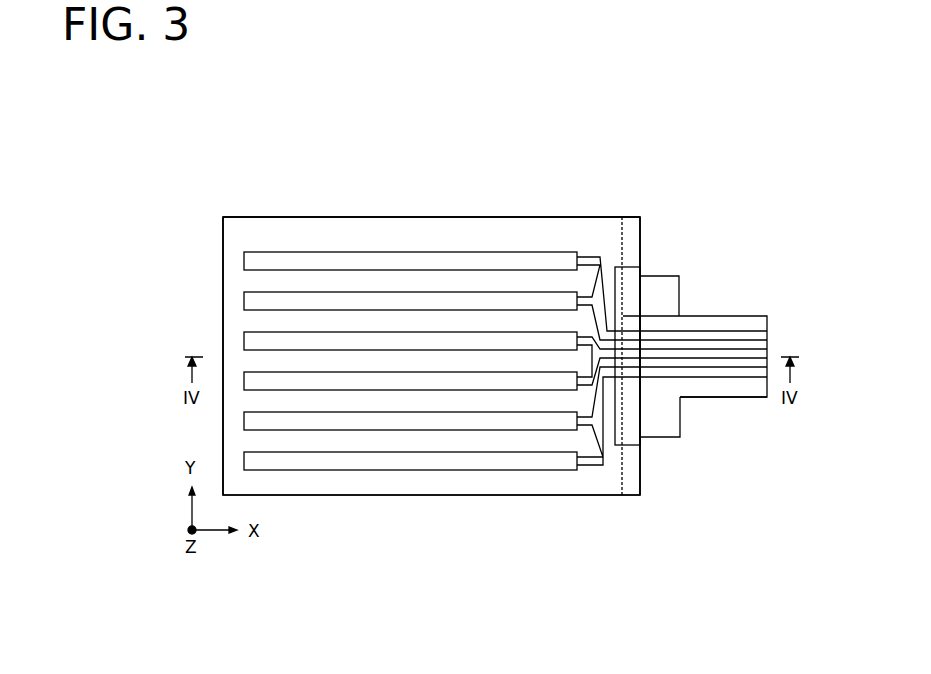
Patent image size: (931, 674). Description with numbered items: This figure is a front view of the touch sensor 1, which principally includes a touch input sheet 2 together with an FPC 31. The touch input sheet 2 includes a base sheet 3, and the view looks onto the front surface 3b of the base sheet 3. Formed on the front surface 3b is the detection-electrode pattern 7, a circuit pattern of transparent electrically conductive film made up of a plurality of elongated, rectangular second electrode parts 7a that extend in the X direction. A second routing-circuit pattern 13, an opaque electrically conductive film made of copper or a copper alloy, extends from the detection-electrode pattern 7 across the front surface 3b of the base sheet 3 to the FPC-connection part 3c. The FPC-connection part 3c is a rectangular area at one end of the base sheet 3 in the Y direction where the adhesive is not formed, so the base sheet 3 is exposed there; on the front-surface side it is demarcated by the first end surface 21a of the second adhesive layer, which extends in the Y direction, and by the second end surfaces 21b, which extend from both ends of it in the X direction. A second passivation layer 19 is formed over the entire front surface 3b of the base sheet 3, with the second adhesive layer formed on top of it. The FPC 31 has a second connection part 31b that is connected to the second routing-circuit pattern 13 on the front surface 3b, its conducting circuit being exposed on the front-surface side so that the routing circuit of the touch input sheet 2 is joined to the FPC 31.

The touch sensor 1 is at (556, 150).
The touch input sheet 2 is at (298, 163).
The base sheet 3 is at (335, 214).
The front surface 3b is at (243, 236).
The FPC-connection part 3c is at (641, 277).
The detection-electrode pattern 7 is at (475, 173).
The second electrode part 7a is at (392, 262).
The second routing-circuit pattern 13 is at (591, 256).
The second passivation layer 19 is at (636, 280).
The first end surface 21a is at (620, 303).
The second end surface 21b is at (645, 277).
The FPC 31 is at (721, 282).
The second connection part 31b is at (644, 391).